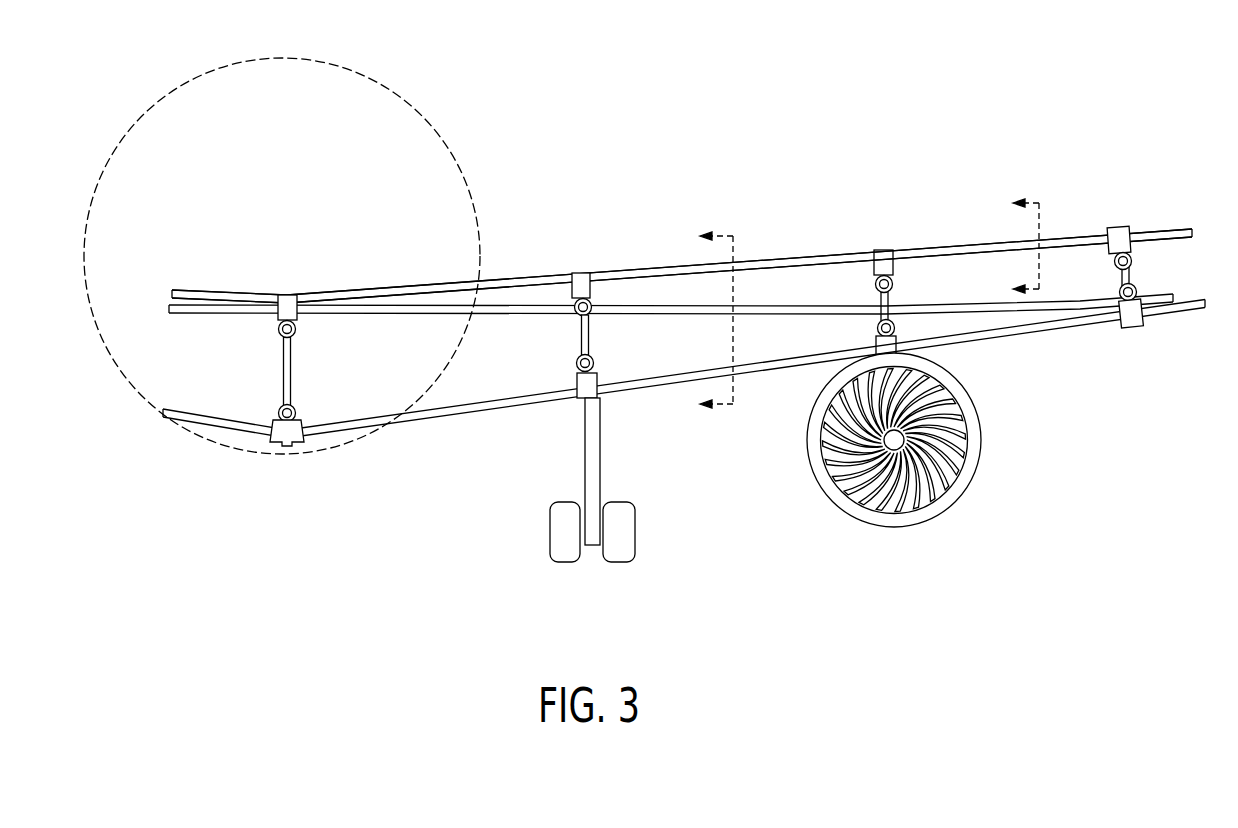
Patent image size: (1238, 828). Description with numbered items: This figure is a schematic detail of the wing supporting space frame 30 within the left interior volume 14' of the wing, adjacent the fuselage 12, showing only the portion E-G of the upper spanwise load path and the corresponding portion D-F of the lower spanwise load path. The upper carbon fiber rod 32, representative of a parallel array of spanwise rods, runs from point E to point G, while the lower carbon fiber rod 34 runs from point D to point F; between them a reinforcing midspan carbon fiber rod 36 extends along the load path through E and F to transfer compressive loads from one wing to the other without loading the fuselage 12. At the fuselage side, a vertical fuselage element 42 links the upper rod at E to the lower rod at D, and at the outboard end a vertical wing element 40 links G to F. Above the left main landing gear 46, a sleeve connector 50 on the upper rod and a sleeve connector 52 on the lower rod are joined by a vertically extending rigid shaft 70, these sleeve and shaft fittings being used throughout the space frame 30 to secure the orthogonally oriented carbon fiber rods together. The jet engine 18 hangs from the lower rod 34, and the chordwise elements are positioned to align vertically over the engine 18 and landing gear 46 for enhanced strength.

The fuselage 12 is at (392, 92).
The space frame 30 is at (753, 150).
The interior volume 14' is at (700, 241).
The upper carbon fiber rod 32 is at (947, 252).
The reinforcing midspan carbon fiber rod 36 is at (783, 313).
The lower carbon fiber rod 34 is at (778, 364).
The vertical fuselage element 42 is at (291, 377).
The sleeve connector 50 is at (576, 307).
The rigid shaft 70 is at (585, 344).
The sleeve connector 52 is at (596, 364).
The left main landing gear 46 is at (614, 487).
The left engine 18 is at (943, 503).
The vertical wing element 40 is at (1131, 276).
The load path point E is at (287, 289).
The load path point D is at (287, 451).
The load path point G is at (1119, 227).
The load path point F is at (1131, 326).